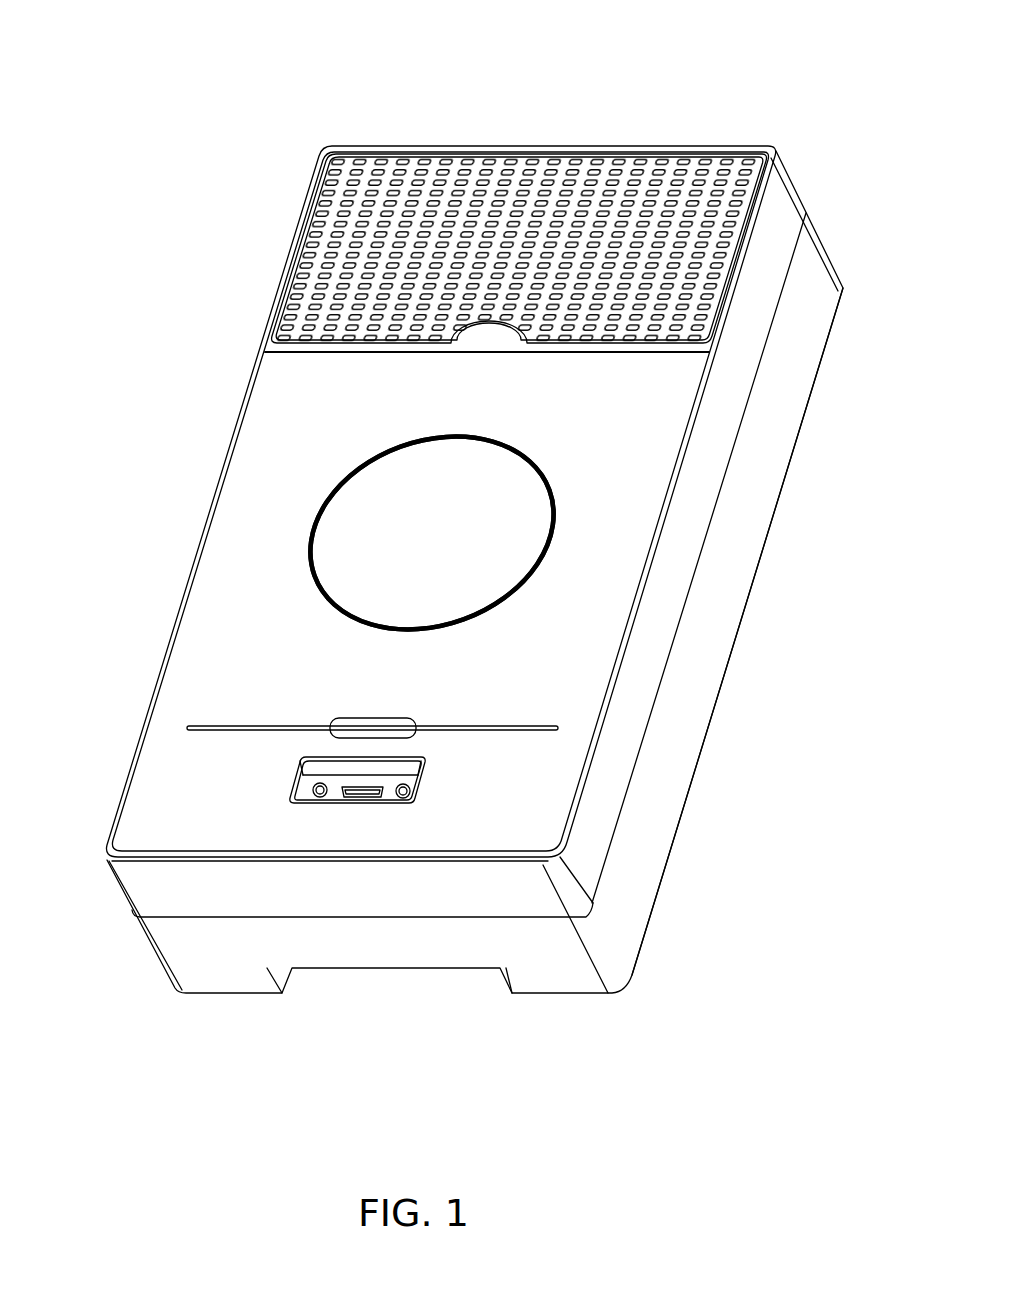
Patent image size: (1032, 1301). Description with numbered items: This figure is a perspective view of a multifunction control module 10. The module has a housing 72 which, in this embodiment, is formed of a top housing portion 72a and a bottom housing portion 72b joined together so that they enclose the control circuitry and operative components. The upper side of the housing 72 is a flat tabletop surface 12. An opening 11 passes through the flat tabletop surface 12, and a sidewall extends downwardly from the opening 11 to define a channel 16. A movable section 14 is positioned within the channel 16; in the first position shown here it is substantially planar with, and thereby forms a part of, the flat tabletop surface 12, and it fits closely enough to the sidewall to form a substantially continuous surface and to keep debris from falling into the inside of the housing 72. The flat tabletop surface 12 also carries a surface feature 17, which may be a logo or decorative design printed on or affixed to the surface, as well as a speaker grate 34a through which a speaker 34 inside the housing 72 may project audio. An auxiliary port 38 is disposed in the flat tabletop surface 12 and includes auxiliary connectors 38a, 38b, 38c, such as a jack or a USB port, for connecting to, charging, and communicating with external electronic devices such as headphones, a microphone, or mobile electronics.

The multifunction control module 10 is at (692, 87).
The opening 11 is at (358, 473).
The flat tabletop surface 12 is at (255, 492).
The movable section 14 is at (436, 546).
The channel 16 is at (528, 450).
The surface feature 17 is at (328, 720).
The speaker 34 is at (459, 222).
The speaker grate 34a is at (368, 177).
The auxiliary port 38 is at (370, 808).
The auxiliary connector 38a is at (358, 795).
The auxiliary connector 38b is at (409, 794).
The auxiliary connector 38c is at (320, 796).
The housing 72 is at (522, 550).
The top housing portion 72a is at (783, 205).
The bottom housing portion 72b is at (818, 265).